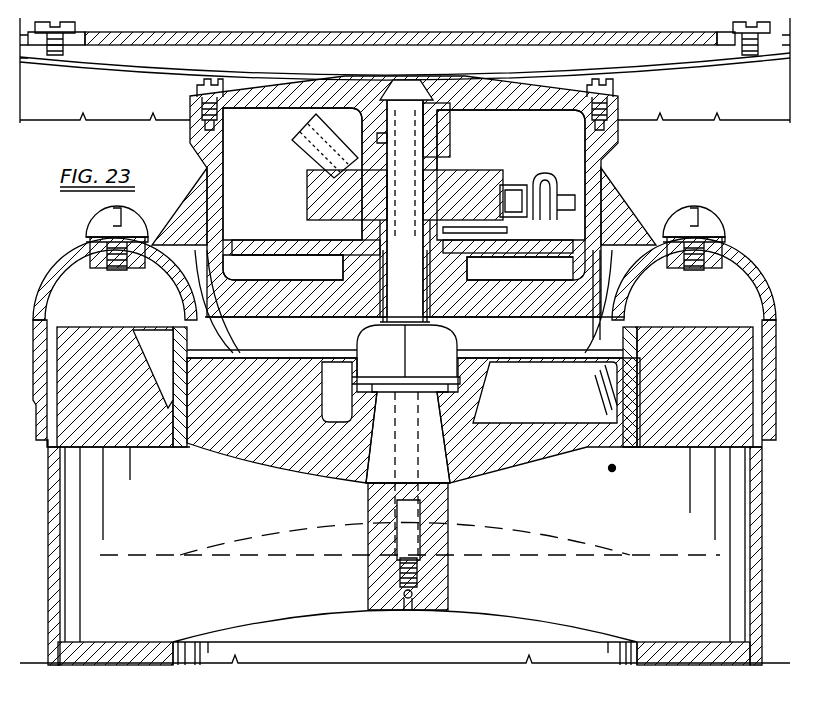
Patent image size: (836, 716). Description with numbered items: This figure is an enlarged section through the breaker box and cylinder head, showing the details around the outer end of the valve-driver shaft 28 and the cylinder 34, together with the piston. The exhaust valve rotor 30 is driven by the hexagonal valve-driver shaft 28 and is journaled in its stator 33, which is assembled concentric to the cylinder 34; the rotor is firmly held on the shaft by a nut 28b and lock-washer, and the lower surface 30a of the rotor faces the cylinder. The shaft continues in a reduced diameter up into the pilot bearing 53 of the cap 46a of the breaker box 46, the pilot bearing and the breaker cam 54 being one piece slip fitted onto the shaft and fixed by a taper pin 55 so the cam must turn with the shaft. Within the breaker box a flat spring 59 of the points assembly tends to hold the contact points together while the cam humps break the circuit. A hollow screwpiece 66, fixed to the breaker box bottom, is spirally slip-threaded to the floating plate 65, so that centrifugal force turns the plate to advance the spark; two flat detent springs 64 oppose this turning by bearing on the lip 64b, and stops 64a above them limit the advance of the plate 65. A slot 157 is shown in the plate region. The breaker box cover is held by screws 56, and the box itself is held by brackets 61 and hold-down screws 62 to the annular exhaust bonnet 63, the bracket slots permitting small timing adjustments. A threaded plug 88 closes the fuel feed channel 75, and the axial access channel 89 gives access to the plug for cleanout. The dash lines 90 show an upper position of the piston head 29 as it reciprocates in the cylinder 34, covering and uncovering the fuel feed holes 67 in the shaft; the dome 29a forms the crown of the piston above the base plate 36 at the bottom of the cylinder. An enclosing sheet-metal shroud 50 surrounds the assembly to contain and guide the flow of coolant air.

The shroud 50 is at (763, 120).
The screws 56 is at (197, 89).
The breaker box 46 is at (600, 173).
The cap 46a is at (267, 108).
The slot 157 is at (511, 195).
The taper pin 55 is at (397, 147).
The flat detent springs 64 is at (347, 159).
The breaker cam 54 is at (307, 197).
The floating plate 65 is at (250, 240).
The pilot bearing 53 is at (440, 131).
The stops 64a is at (400, 197).
The flat spring 59 is at (519, 185).
The hollow screwpiece 66 is at (377, 277).
The lip 64b is at (402, 240).
The nut 28b is at (457, 339).
The exhaust valve rotor 30 is at (514, 360).
The body lower surface 30a is at (335, 477).
The stator 33 is at (110, 327).
The brackets 61 is at (720, 237).
The exhaust bonnet 63 is at (760, 287).
The hold-down screws 62 is at (700, 215).
The axial access channel 89 is at (420, 437).
The valve-driver shaft 28 is at (450, 492).
The threaded plug 88 is at (398, 575).
The fuel feed channel 75 is at (355, 614).
The fuel feed holes 67 is at (410, 610).
The cylinder 34 is at (612, 472).
The upper position of the piston head 90 is at (586, 553).
The dome 29a is at (502, 617).
The base plate 36 is at (110, 642).
The piston head 29 is at (193, 642).